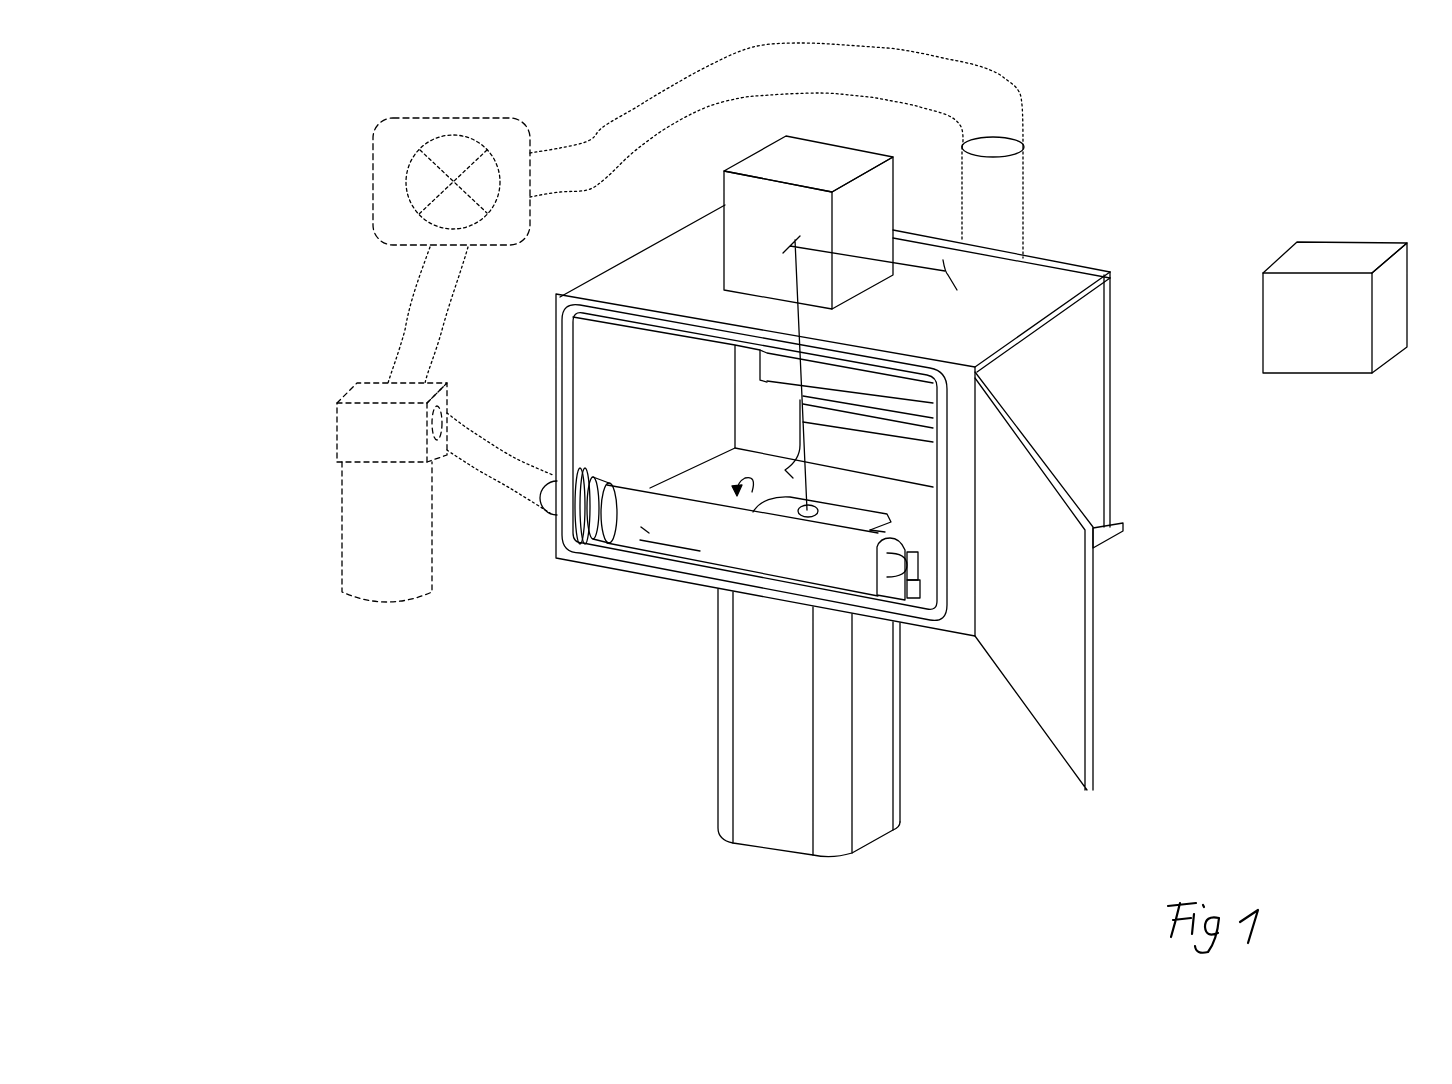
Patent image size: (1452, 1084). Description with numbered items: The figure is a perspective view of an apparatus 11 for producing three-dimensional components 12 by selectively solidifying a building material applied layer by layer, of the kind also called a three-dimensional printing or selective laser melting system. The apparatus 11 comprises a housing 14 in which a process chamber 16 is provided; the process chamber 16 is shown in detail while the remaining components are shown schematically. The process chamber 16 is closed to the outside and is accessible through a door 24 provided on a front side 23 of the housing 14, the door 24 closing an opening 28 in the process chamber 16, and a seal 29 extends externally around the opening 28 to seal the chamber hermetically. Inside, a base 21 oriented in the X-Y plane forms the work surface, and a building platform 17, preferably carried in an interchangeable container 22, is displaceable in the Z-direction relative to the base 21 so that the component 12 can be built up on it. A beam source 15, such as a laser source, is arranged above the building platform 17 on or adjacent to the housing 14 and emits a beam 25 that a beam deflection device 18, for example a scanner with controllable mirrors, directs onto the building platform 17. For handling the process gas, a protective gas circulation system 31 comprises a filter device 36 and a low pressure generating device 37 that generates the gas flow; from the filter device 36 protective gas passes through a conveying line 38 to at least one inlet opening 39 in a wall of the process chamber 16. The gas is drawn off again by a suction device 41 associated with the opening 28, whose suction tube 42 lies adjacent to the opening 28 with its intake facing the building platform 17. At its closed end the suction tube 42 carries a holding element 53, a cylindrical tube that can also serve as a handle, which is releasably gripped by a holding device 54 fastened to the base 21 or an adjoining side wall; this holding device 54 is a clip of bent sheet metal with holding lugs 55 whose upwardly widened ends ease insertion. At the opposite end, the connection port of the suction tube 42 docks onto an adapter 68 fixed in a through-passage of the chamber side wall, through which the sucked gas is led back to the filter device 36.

The apparatus 11 is at (1203, 570).
The three-dimensional component 12 is at (855, 522).
The housing 14 is at (1058, 357).
The beam source 15 is at (1143, 325).
The process chamber 16 is at (718, 492).
The building platform 17 is at (873, 532).
The beam deflection device 18 is at (790, 246).
The base 21 is at (752, 492).
The interchangeable container 22 is at (880, 730).
The front side 23 is at (957, 618).
The door 24 is at (1050, 675).
The beam 25 is at (917, 272).
The opening 28 is at (534, 369).
The seal 29 is at (662, 585).
The protective gas circulation system 31 is at (276, 618).
The filter device 36 is at (332, 516).
The low pressure generating device 37 is at (362, 180).
The conveying line 38 is at (1033, 107).
The inlet opening 39 is at (872, 455).
The suction device 41 is at (603, 575).
The suction tube 42 is at (645, 530).
The holding element 53 is at (930, 572).
The holding device 54 is at (923, 588).
The holding lugs 55 is at (925, 563).
The adapter 68 is at (582, 510).